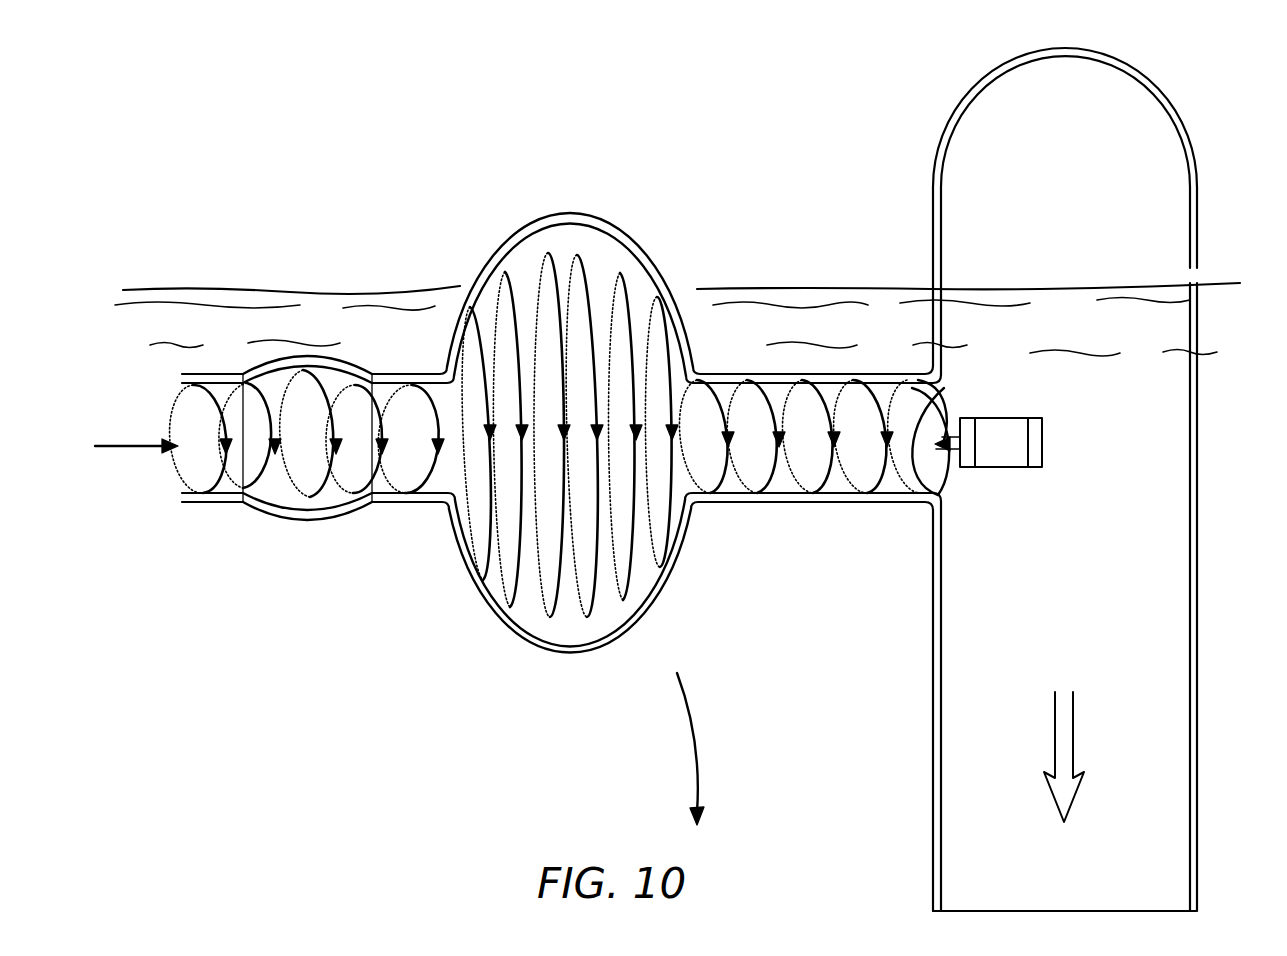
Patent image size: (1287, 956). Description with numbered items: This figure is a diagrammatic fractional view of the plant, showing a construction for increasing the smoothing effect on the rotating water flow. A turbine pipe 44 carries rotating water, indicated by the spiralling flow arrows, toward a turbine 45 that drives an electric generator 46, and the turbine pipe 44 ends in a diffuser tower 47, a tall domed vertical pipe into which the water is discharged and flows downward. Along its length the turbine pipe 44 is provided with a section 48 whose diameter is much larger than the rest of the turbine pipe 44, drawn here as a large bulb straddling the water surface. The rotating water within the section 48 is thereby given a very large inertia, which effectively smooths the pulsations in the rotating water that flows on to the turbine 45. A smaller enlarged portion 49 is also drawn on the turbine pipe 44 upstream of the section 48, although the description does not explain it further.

The turbine pipe 44 is at (823, 503).
The turbine 45 is at (940, 493).
The electric generator 46 is at (1007, 467).
The diffuser tower 47 is at (1160, 478).
The section 48 is at (606, 226).
The small bulge chamber 49 is at (305, 513).